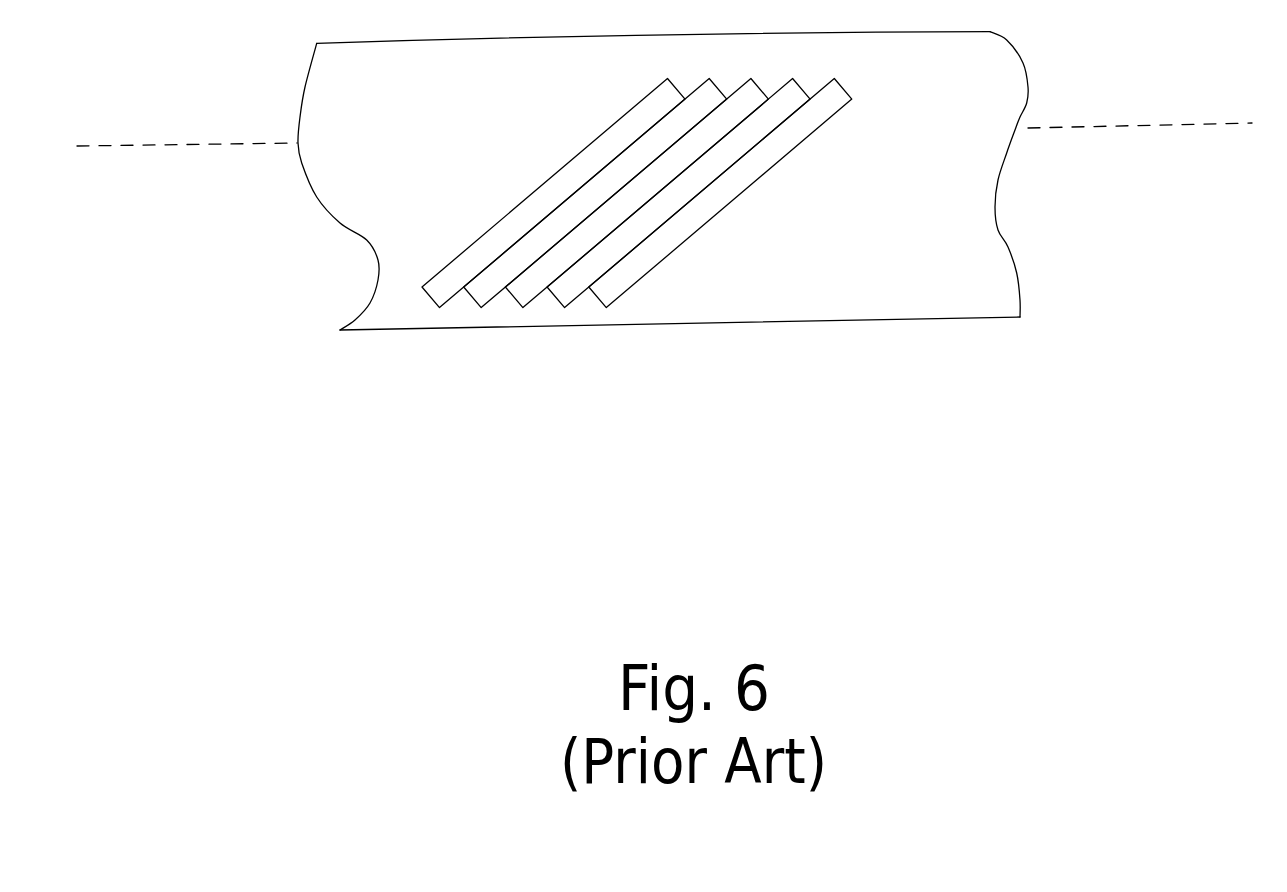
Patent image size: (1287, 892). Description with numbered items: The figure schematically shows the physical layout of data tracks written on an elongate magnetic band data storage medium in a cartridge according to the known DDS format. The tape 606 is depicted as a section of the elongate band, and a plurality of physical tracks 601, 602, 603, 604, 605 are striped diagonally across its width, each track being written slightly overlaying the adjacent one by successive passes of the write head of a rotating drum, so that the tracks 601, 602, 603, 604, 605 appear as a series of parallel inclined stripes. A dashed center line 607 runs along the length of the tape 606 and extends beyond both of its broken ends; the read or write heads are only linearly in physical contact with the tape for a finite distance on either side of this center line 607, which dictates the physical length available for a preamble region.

The first electrode strip 601 is at (556, 172).
The second electrode strip 602 is at (482, 307).
The third electrode strip 603 is at (524, 308).
The fourth electrode strip 604 is at (566, 307).
The fifth electrode strip 605 is at (748, 187).
The substrate 606 is at (663, 181).
The center line 607 is at (670, 116).